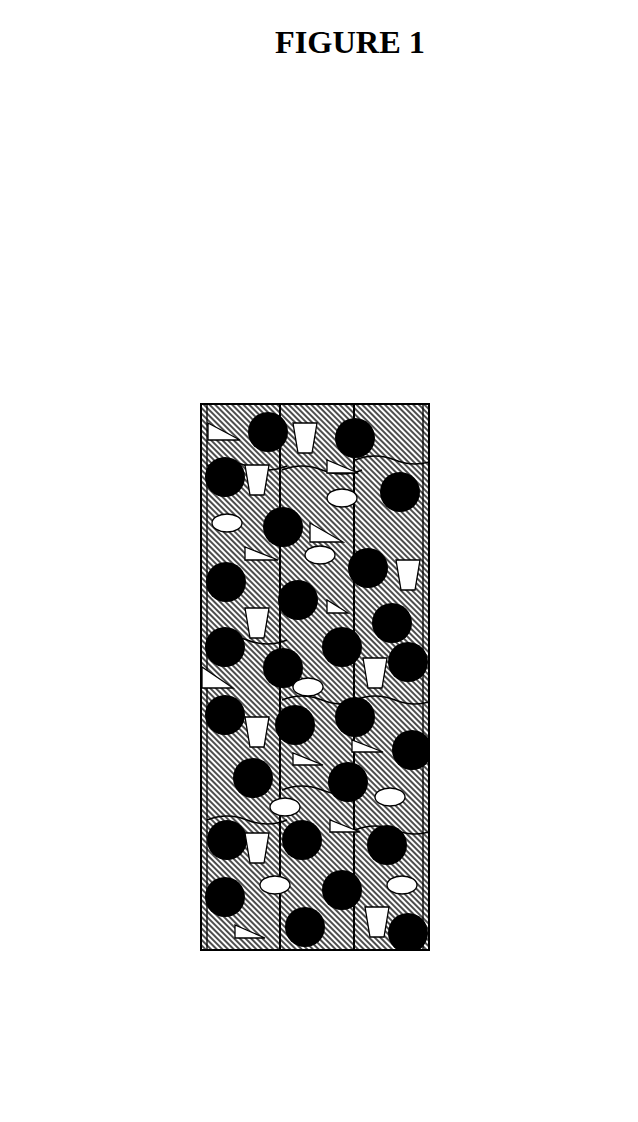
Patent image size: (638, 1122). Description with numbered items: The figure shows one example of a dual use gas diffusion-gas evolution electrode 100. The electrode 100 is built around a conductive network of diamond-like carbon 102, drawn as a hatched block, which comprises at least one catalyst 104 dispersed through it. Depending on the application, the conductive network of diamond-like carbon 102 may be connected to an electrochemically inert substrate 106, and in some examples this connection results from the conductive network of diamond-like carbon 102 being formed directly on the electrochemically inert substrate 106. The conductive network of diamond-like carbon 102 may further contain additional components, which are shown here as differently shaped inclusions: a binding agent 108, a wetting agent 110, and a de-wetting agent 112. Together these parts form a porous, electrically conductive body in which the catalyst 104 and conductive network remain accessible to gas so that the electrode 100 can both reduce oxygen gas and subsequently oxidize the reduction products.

The dual use gas diffusion-gas evolution electrode 100 is at (173, 358).
The conductive network of diamond-like carbon 102 is at (433, 425).
The catalyst 104 is at (200, 890).
The electrochemically inert substrate 106 is at (432, 730).
The binding agent 108 is at (417, 886).
The wetting agent 110 is at (420, 577).
The de-wetting agent 112 is at (202, 676).